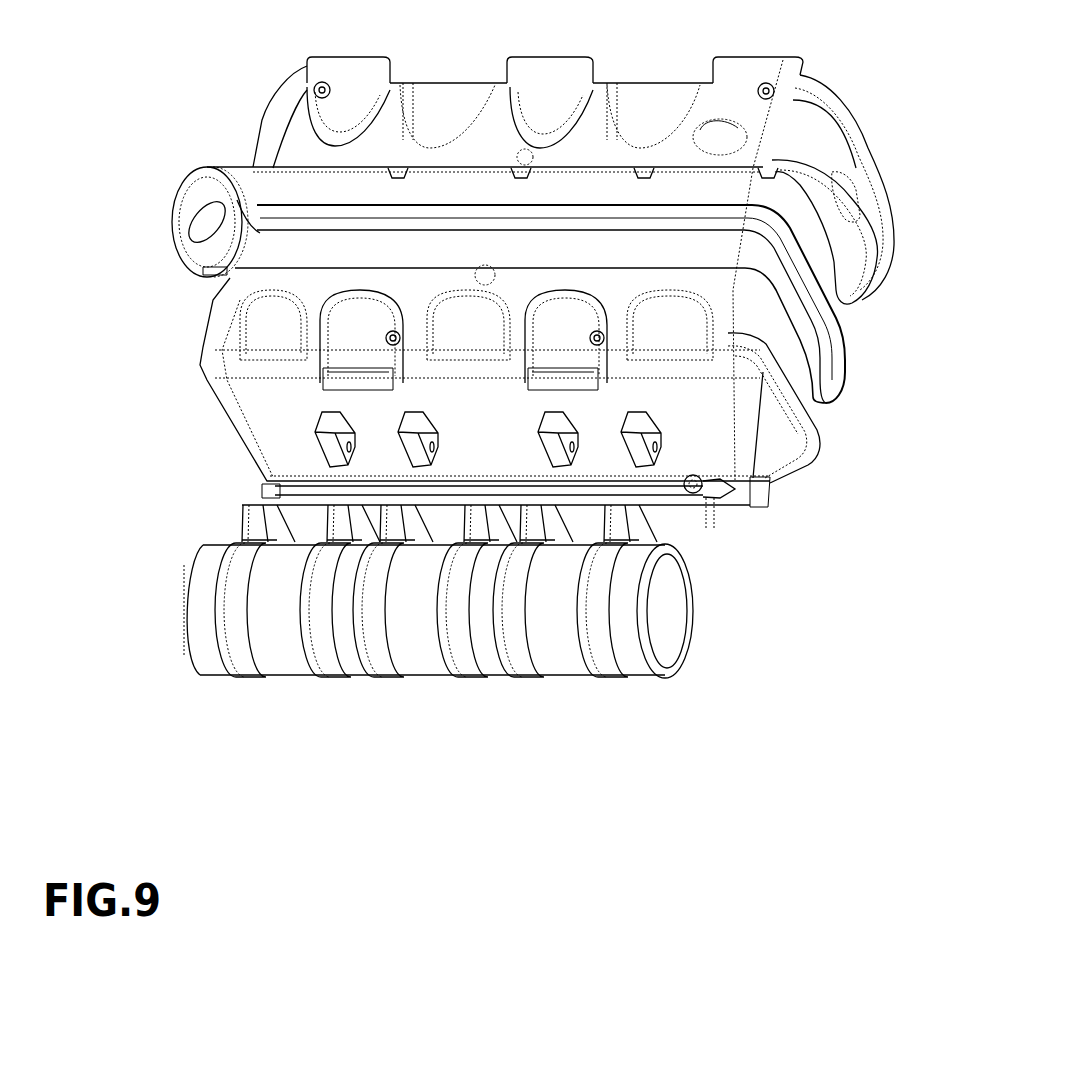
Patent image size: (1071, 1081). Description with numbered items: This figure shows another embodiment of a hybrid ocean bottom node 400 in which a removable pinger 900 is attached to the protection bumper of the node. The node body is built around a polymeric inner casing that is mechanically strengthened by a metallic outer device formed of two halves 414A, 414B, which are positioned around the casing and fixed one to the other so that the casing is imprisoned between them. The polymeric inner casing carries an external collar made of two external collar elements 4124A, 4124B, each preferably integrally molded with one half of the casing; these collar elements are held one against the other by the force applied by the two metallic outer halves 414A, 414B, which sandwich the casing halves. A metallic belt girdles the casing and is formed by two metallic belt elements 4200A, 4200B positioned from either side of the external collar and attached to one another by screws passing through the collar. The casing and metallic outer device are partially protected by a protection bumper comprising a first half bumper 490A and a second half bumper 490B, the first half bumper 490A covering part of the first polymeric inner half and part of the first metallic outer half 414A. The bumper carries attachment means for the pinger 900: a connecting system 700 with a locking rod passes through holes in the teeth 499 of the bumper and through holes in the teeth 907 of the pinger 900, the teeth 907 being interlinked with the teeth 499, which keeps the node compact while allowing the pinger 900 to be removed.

The housing assembly 400 is at (816, 72).
The first half bumper 490A is at (638, 78).
The second half bumper 490B is at (230, 415).
The first metallic outer half 414A is at (528, 196).
The second metallic outer half 414B is at (284, 253).
The first external collar element 4124A is at (328, 208).
The second external collar element 4124B is at (270, 220).
The first metallic belt element 4200A is at (842, 280).
The second metallic belt element 4200B is at (823, 336).
The teeth of the bumper 499 is at (317, 438).
The hinge rod with pin 700 is at (679, 504).
The teeth of the pinger 907 is at (639, 530).
The pinger 900 is at (212, 623).